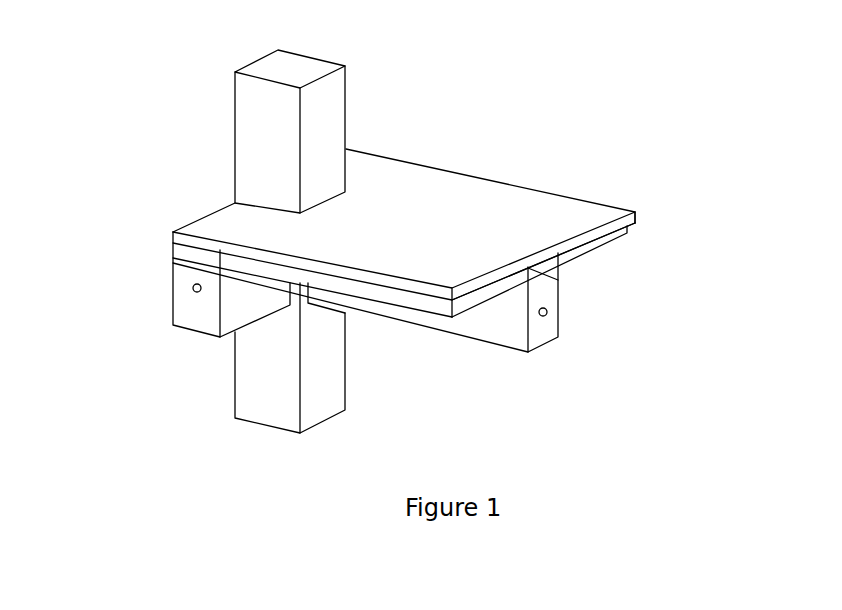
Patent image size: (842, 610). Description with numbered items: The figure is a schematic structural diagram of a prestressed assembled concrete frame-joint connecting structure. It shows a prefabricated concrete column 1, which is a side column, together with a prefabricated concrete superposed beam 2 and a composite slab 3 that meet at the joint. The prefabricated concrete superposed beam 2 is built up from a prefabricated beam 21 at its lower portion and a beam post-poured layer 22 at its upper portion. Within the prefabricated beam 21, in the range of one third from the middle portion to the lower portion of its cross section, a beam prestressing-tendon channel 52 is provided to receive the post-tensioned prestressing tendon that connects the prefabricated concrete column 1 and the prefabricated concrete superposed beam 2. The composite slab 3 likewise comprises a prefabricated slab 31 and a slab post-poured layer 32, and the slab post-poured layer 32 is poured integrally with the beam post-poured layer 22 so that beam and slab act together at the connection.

The prefabricated concrete column 1 is at (266, 147).
The prefabricated concrete superposed beam 2 is at (386, 327).
The prefabricated beam 21 is at (383, 315).
The beam post-poured layer 22 is at (179, 291).
The beam prestressing-tendon channel 52 is at (193, 292).
The composite slab 3 is at (588, 233).
The prefabricated slab 31 is at (626, 233).
The slab post-poured layer 32 is at (632, 210).